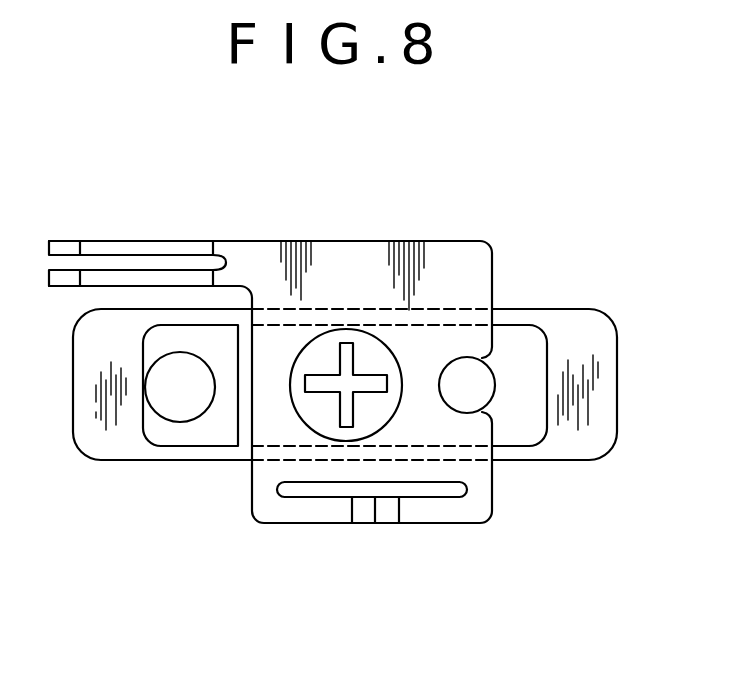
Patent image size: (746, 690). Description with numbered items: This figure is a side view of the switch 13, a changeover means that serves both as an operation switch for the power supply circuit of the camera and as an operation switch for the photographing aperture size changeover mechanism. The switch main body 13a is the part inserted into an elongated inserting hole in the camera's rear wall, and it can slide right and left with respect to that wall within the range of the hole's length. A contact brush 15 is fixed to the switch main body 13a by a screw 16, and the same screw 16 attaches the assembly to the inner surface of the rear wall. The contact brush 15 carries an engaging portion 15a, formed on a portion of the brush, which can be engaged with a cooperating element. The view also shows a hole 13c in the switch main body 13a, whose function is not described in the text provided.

The switch 13 is at (458, 221).
The switch main body 13a is at (607, 450).
The mounting hole 13c is at (178, 410).
The contact brush 15 is at (345, 265).
The engaging portion 15a is at (362, 523).
The screw 16 is at (372, 418).